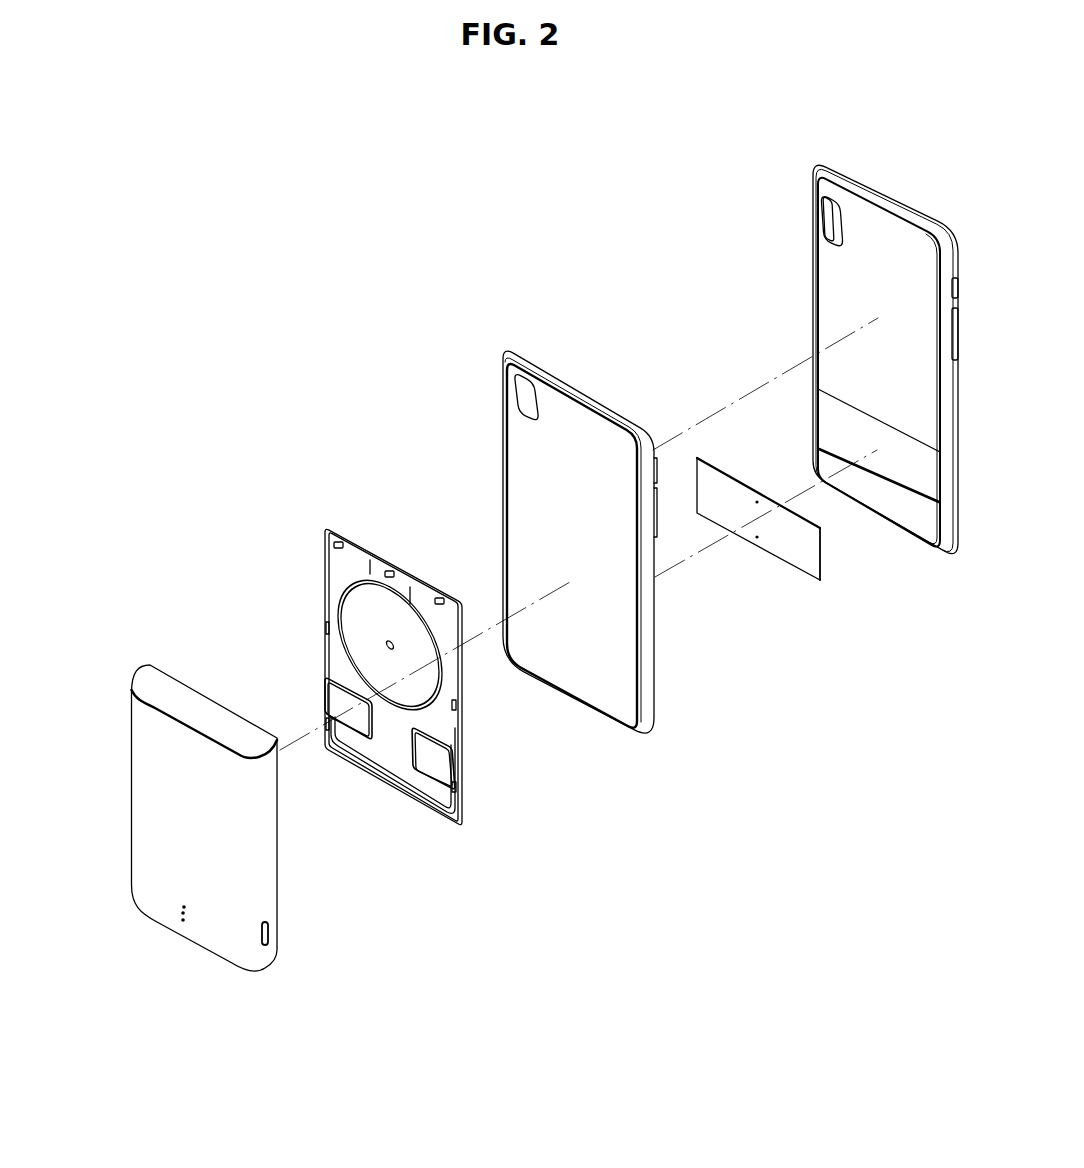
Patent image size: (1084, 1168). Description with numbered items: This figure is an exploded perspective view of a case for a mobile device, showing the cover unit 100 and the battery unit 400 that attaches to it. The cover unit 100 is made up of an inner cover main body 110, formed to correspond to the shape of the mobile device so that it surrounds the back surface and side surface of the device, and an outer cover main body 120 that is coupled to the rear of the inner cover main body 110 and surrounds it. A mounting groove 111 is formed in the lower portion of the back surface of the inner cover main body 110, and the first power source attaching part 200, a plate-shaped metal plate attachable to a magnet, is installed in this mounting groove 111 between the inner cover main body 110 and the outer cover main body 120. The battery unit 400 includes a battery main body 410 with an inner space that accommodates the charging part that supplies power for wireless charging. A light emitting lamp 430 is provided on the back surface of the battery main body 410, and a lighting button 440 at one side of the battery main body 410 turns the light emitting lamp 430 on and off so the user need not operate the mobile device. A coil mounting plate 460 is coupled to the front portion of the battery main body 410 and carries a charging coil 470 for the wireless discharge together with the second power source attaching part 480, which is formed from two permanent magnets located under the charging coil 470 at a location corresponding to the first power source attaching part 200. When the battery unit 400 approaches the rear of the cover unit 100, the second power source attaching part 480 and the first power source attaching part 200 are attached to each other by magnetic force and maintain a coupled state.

The cover unit 100 is at (689, 186).
The inner cover main body 110 is at (813, 388).
The mounting groove 111 is at (910, 470).
The outer cover main body 120 is at (597, 418).
The first power source attaching part 200 is at (800, 543).
The battery unit 400 is at (402, 866).
The battery main body 410 is at (160, 750).
The light emitting lamp 430 is at (182, 917).
The lighting button 440 is at (270, 933).
The coil mounting plate 460 is at (343, 575).
The charging coil 470 is at (362, 650).
The second power source attaching part 480 is at (335, 700).